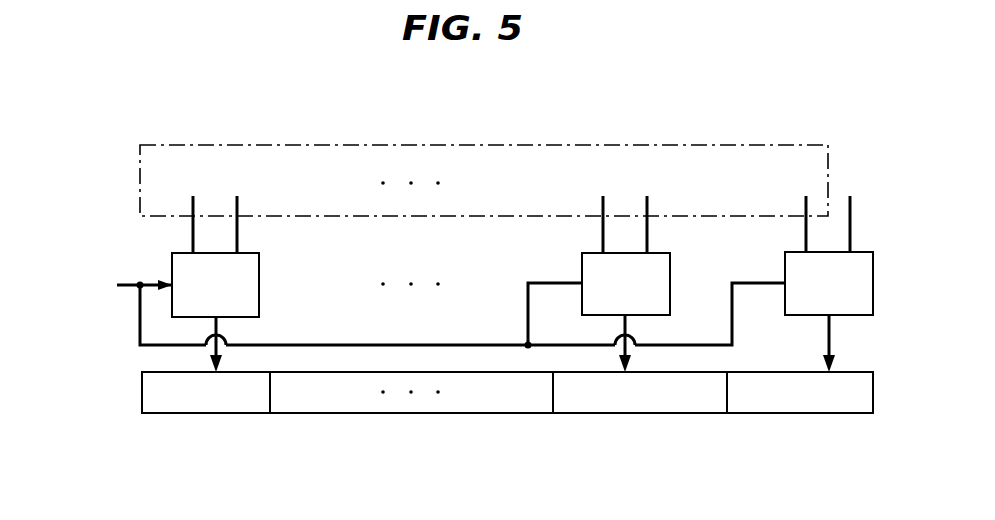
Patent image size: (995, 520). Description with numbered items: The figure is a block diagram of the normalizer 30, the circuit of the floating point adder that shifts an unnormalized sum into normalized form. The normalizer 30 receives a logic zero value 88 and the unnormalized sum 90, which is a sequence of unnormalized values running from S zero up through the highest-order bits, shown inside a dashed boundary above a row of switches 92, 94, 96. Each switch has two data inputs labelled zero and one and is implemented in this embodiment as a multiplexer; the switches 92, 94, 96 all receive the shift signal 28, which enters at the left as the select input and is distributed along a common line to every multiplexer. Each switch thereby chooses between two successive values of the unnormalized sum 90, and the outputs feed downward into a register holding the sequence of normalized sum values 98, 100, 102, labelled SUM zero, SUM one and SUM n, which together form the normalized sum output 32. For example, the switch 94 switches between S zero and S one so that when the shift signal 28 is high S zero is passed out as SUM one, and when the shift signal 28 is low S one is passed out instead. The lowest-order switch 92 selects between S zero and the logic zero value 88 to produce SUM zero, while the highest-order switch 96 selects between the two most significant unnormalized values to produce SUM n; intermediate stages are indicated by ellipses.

The shift signal 28 is at (84, 252).
The normalizer 30 is at (192, 126).
The normalized sum output 32 is at (507, 422).
The logic 0 value 88 is at (851, 152).
The unnormalized sum 90 is at (330, 145).
The switch 92 is at (873, 252).
The switch 94 is at (670, 262).
The switch 96 is at (259, 270).
The normalized sum value SUM_0 98 is at (846, 414).
The normalized sum value SUM_1 100 is at (655, 414).
The normalized sum value SUM_n 102 is at (230, 414).